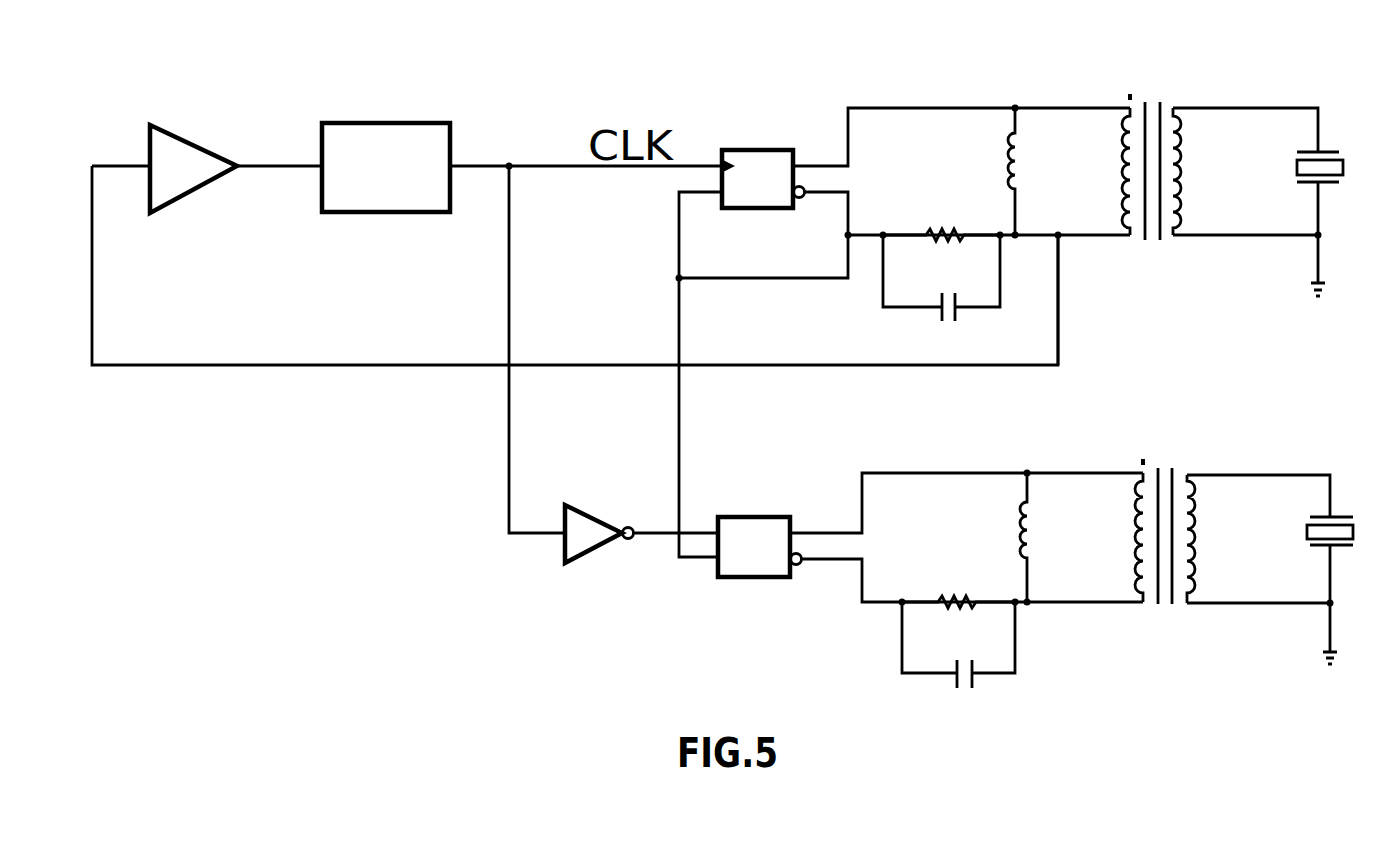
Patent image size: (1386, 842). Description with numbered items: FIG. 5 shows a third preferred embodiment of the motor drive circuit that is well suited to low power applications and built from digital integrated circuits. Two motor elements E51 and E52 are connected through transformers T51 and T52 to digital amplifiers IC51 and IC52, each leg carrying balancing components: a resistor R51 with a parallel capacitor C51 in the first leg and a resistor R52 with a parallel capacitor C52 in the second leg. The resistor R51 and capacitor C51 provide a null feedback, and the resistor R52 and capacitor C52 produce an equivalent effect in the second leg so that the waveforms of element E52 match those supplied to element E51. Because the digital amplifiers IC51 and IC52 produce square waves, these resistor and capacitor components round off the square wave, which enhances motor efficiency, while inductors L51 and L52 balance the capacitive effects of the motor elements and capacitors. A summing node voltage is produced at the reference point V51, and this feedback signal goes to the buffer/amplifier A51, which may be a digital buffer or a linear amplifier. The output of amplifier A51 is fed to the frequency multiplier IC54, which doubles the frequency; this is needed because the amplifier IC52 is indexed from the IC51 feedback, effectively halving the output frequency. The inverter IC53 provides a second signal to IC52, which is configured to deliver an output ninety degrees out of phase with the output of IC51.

The buffer/amplifier A51 is at (263, 108).
The frequency multiplier IC54 is at (432, 123).
The digital amplifier IC51 is at (783, 100).
The digital amplifier IC52 is at (792, 475).
The inverter IC53 is at (630, 465).
The resistor R51 is at (966, 200).
The parallel capacitor C51 is at (962, 272).
The inductor L51 is at (1048, 171).
The reference point V51 is at (1058, 292).
The transformer T51 is at (1185, 47).
The motor element E51 is at (1340, 150).
The resistor R52 is at (984, 568).
The parallel capacitor C52 is at (985, 638).
The inductor L52 is at (1062, 516).
The transformer T52 is at (1200, 428).
The motor element E52 is at (1348, 517).